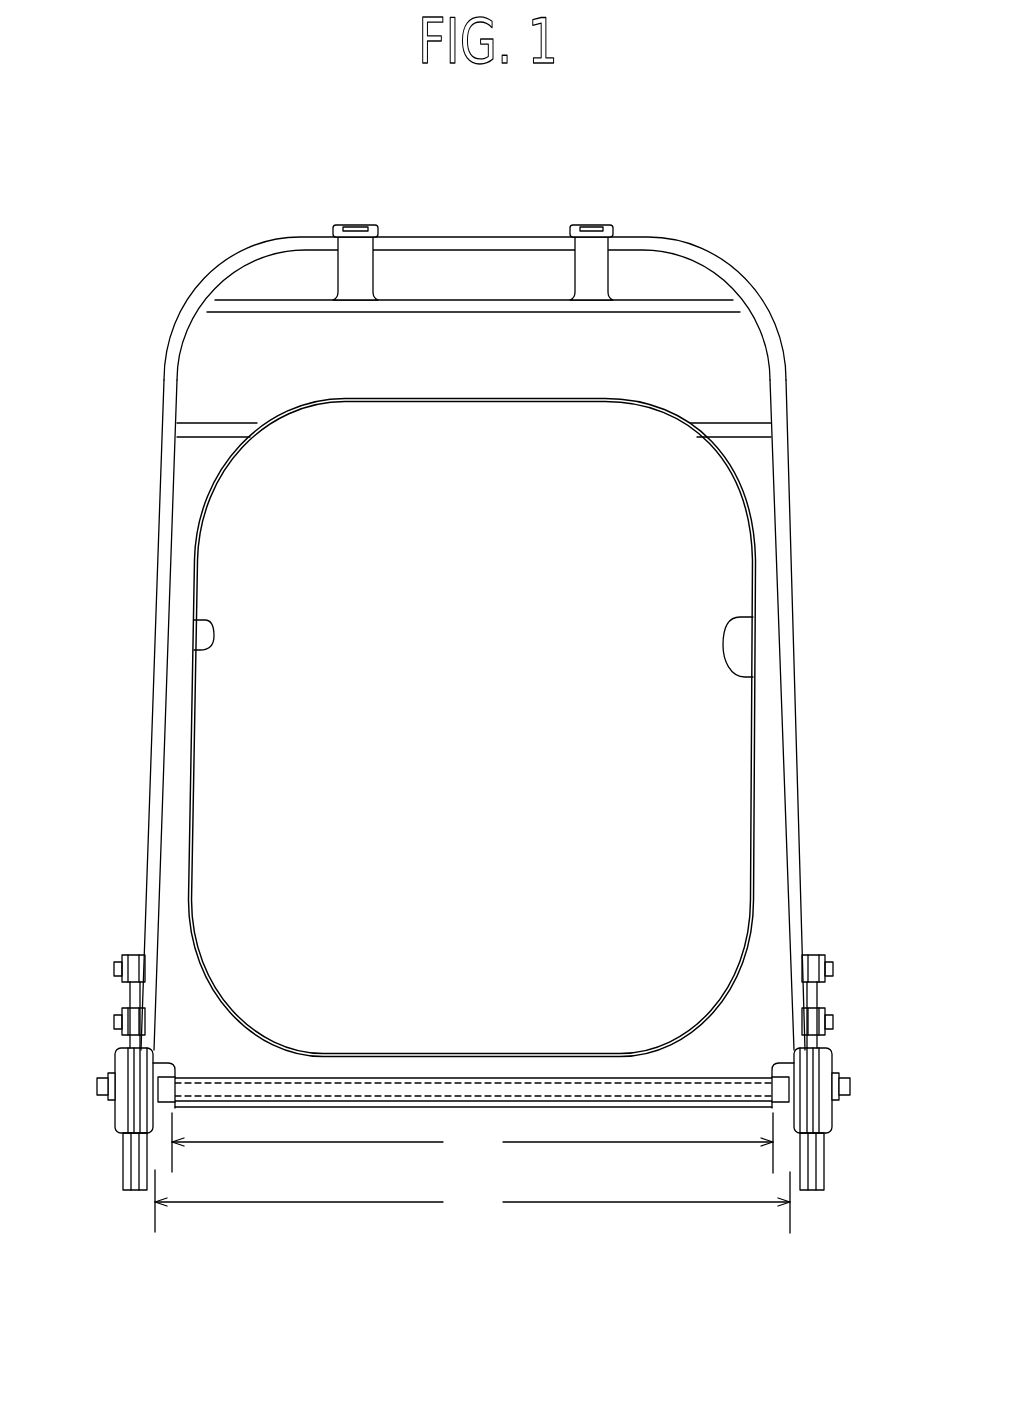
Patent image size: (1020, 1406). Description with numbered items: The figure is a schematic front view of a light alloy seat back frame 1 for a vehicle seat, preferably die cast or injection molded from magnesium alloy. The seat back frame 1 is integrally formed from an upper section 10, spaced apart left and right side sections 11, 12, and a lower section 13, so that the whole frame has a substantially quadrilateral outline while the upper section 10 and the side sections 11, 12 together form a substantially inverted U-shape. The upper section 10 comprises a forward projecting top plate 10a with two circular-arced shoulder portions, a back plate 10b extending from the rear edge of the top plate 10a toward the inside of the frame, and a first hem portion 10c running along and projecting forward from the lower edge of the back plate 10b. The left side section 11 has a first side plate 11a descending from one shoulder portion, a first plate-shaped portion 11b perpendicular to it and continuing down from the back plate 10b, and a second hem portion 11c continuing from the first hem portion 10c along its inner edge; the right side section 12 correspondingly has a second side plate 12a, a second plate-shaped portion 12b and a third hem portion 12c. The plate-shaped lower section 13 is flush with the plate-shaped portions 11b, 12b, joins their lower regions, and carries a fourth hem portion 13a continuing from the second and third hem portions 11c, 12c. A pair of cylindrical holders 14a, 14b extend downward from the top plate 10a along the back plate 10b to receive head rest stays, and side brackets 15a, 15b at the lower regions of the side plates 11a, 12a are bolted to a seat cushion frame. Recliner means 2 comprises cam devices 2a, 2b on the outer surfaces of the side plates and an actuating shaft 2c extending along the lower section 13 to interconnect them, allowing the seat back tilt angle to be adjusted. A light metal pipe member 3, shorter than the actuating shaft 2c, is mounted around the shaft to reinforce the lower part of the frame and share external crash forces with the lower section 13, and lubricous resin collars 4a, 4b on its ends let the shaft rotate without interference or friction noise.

The seat back frame 1 is at (740, 271).
The recliner means 2 is at (835, 1038).
The cam device 2a is at (115, 1068).
The cam device 2b is at (837, 1065).
The actuating shaft 2c is at (595, 1092).
The pipe member 3 is at (400, 1098).
The collar 4a is at (167, 1108).
The collar 4b is at (781, 1103).
The upper section 10 is at (473, 236).
The top plate 10a is at (422, 237).
The back plate 10b is at (515, 352).
The first hem portion 10c is at (500, 405).
The left side section 11 is at (160, 552).
The first side plate 11a is at (155, 665).
The first plate-shaped portion 11b is at (193, 458).
The second hem portion 11c is at (194, 620).
The right side section 12 is at (793, 557).
The second side plate 12a is at (795, 700).
The second plate-shaped portion 12b is at (780, 808).
The third hem portion 12c is at (740, 617).
The lower section 13 is at (472, 1055).
The fourth hem portion 13a is at (427, 1057).
The cylindrical holder 14a is at (333, 270).
The cylindrical holder 14b is at (613, 270).
The side bracket 15a is at (137, 1190).
The side bracket 15b is at (807, 1197).